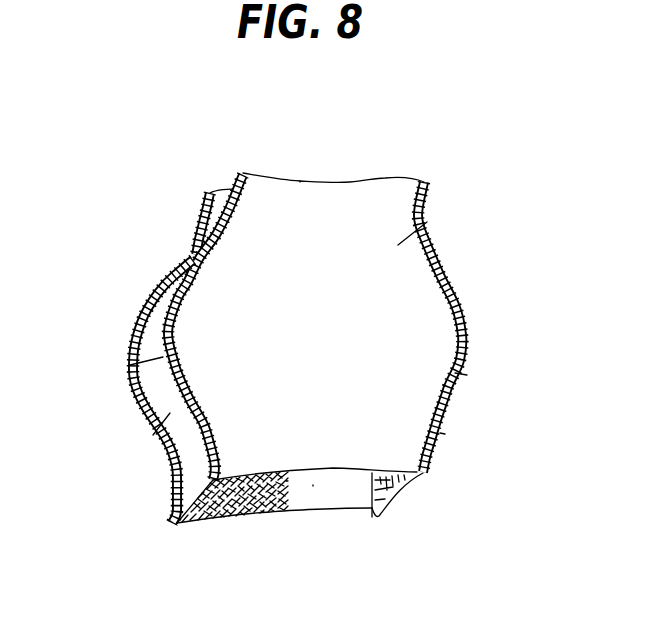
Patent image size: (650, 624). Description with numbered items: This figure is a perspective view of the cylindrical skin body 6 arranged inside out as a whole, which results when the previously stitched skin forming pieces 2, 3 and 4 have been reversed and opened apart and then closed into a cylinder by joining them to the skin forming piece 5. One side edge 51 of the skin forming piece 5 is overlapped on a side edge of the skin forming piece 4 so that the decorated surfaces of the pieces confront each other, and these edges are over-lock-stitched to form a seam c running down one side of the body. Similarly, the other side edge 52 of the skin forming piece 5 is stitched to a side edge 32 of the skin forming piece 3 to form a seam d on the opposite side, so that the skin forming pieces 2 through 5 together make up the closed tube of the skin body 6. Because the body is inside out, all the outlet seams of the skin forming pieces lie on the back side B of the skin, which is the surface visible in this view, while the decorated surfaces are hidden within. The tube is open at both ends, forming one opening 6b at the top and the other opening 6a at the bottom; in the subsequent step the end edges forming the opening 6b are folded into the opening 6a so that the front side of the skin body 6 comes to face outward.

The skin forming piece 2 is at (267, 518).
The skin forming piece 3 is at (400, 487).
The skin forming piece 4 is at (153, 435).
The skin forming piece 5 is at (313, 213).
The cylindrical skin body 6 is at (135, 286).
The other opening 6a is at (313, 485).
The one opening 6b is at (367, 182).
The side edge 32 is at (440, 433).
The one side edge 51 is at (192, 256).
The other side edge 52 is at (453, 307).
The back side B is at (427, 222).
The seam c is at (130, 365).
The seam d is at (467, 375).